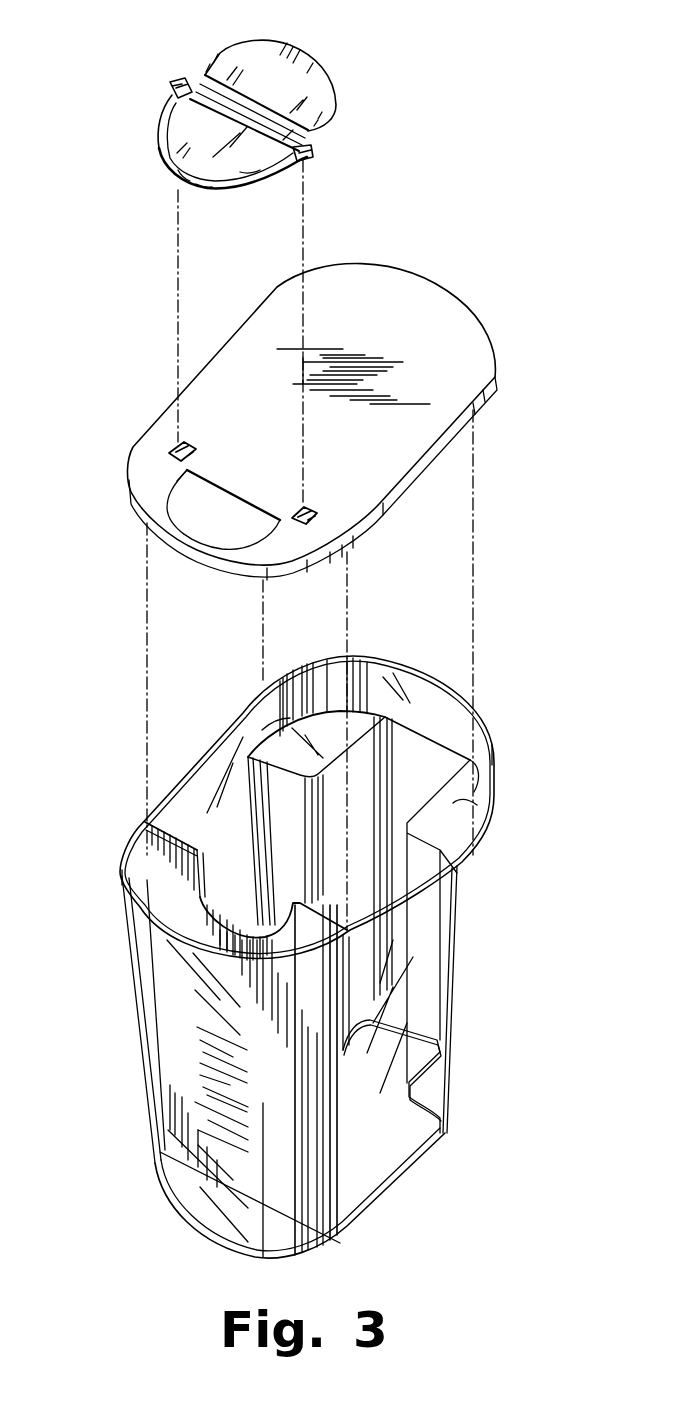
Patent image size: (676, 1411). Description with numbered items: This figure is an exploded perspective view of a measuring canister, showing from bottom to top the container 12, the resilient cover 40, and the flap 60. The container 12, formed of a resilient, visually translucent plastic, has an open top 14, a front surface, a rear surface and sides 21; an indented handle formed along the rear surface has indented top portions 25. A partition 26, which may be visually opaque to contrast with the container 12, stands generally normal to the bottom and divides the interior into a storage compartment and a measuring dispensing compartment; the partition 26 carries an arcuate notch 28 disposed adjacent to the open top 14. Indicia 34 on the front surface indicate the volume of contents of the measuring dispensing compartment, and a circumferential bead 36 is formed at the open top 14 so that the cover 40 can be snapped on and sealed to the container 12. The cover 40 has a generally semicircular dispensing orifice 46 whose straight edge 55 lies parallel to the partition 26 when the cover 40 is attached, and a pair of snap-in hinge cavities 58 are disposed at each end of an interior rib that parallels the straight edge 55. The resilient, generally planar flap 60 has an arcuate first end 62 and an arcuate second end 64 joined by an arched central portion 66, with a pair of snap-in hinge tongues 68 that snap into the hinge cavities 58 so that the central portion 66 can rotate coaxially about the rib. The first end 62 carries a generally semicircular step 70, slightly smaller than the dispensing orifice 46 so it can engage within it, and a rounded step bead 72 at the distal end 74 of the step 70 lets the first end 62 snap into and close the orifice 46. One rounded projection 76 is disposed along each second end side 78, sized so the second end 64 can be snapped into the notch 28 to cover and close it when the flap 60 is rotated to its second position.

The container 12 is at (462, 1083).
The open top 14 is at (423, 747).
The sides 21 is at (427, 917).
The indented top portions 25 is at (280, 745).
The partition 26 is at (157, 898).
The arcuate notch 28 is at (210, 855).
The indicia 34 is at (207, 1027).
The circumferential bead 36 is at (492, 740).
The resilient cover 40 is at (478, 295).
The dispensing orifice 46 is at (187, 508).
The straight edge 55 is at (203, 483).
The snap-in hinge cavities 58 is at (177, 448).
The flap 60 is at (148, 75).
The first end 62 is at (160, 153).
The second end 64 is at (307, 73).
The arched central portion 66 is at (303, 137).
The snap-in hinge tongues 68 is at (176, 86).
The semicircular step 70 is at (250, 167).
The step bead 72 is at (181, 170).
The distal end 74 is at (202, 187).
The rounded projection 76 is at (222, 53).
The second end sides 78 is at (213, 63).